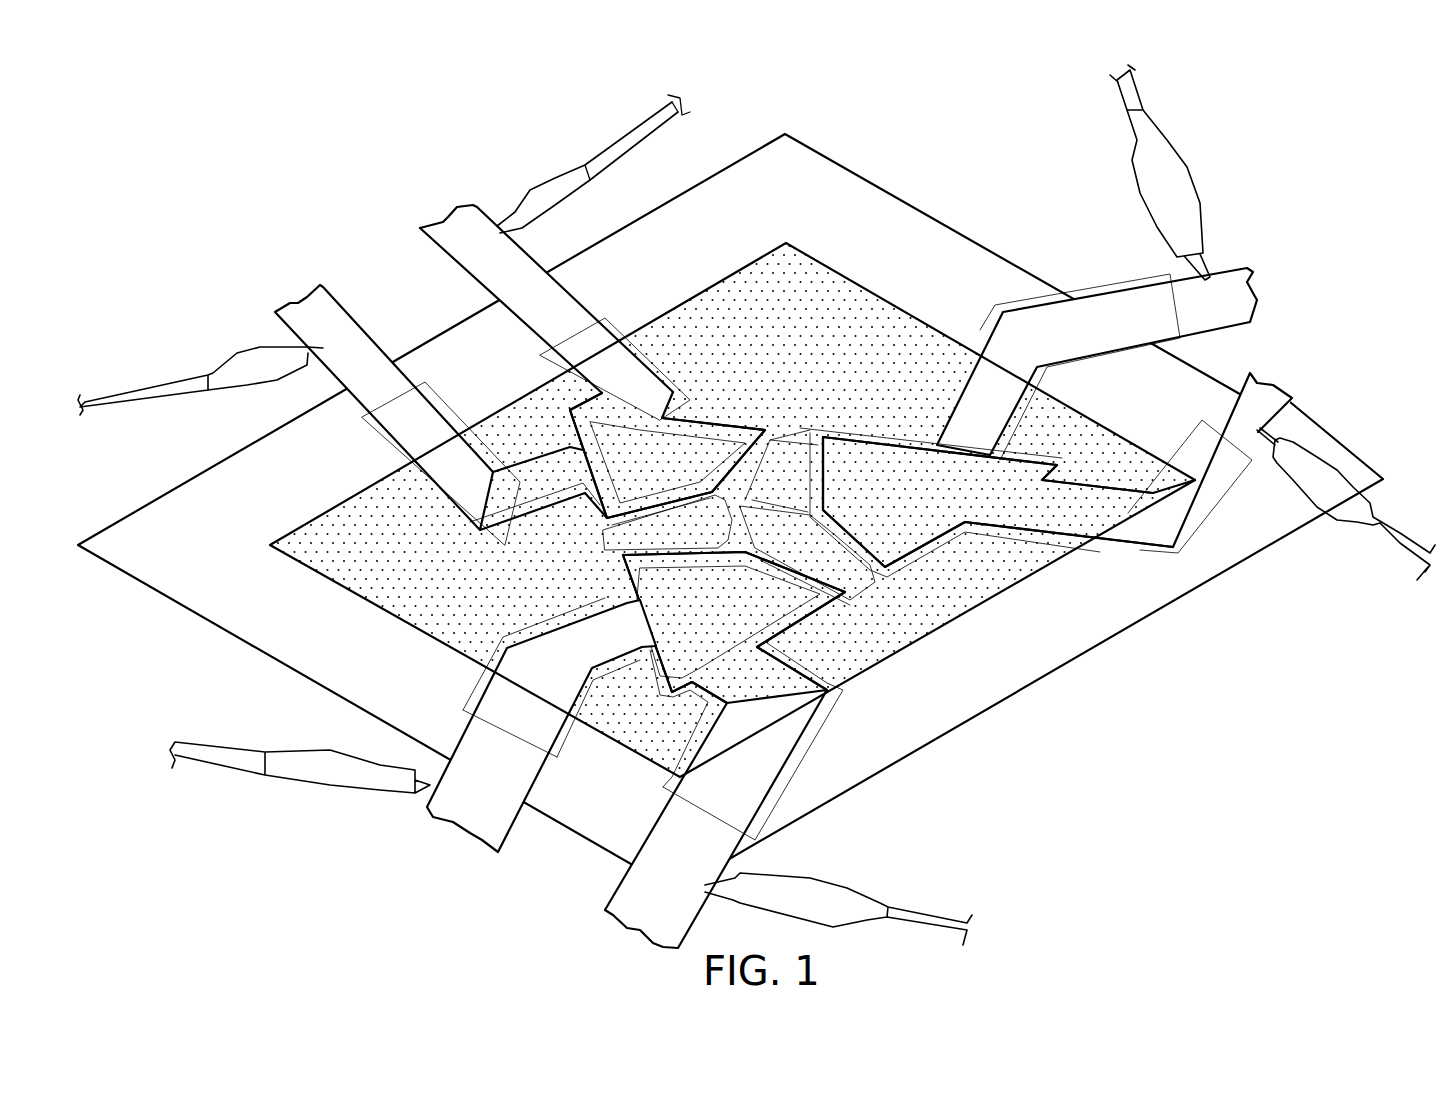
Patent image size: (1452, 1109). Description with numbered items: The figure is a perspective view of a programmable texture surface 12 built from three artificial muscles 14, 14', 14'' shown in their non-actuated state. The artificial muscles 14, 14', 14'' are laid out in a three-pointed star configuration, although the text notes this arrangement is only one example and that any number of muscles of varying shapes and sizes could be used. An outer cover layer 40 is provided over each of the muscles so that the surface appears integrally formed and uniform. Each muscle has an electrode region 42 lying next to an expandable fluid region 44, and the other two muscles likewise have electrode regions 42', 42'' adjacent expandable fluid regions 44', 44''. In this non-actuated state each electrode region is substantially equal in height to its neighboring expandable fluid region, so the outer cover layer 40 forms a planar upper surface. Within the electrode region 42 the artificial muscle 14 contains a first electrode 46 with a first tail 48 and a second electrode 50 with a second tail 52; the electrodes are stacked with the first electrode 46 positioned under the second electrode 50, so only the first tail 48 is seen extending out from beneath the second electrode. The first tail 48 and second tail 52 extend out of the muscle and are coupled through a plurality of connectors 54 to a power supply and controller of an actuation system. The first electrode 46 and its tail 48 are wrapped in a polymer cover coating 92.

The programmable texture surface 12 is at (953, 205).
The artificial muscle 14 is at (667, 402).
The artificial muscle 14' is at (636, 744).
The artificial muscle 14'' is at (1057, 470).
The outer cover layer 40 is at (780, 262).
The electrode region 42 is at (670, 429).
The electrode region 42' is at (756, 627).
The electrode region 42'' is at (1028, 422).
The expandable fluid region 44 is at (661, 478).
The expandable fluid region 44' is at (842, 540).
The expandable fluid region 44'' is at (822, 395).
The first electrode 46 is at (438, 512).
The first tail 48 is at (310, 300).
The second electrode 50 is at (738, 432).
The second tail 52 is at (530, 258).
The connectors 54 is at (552, 188).
The polymer cover coating 92 is at (612, 325).